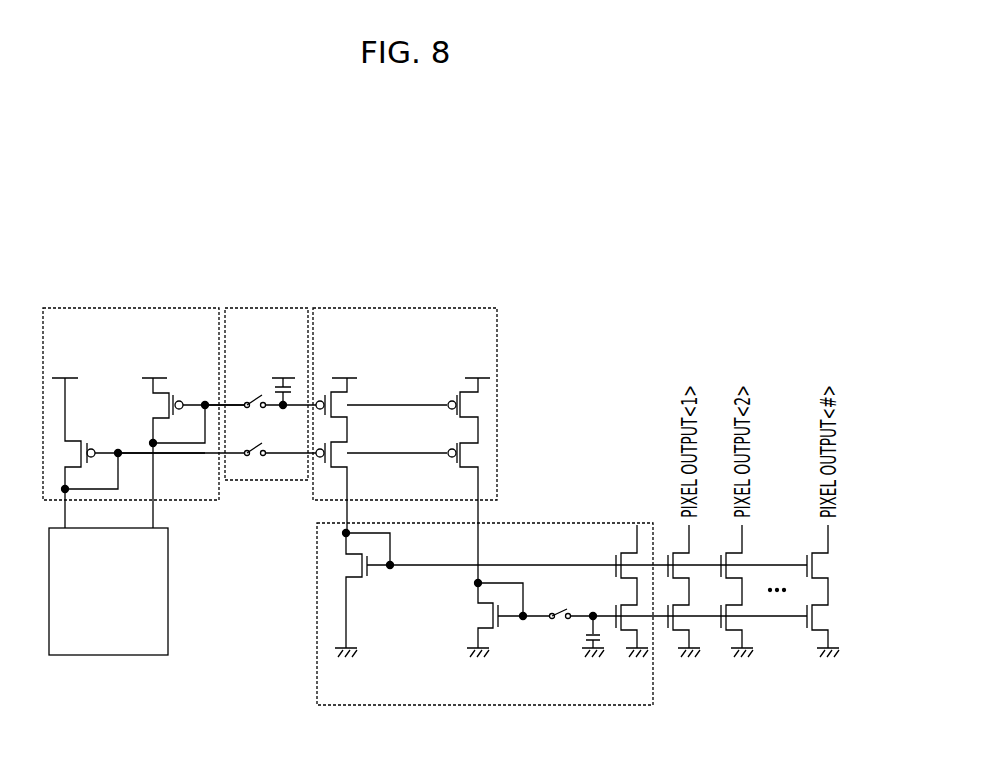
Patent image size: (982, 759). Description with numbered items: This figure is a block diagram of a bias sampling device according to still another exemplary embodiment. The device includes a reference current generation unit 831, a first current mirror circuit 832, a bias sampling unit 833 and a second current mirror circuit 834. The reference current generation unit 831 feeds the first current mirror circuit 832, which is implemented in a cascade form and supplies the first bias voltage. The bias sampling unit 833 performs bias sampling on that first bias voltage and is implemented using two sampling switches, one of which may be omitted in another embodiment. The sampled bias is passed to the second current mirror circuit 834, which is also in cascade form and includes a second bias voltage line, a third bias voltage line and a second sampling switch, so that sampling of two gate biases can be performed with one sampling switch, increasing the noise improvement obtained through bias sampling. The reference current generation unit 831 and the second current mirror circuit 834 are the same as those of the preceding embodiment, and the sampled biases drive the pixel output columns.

The reference current generation unit 831 is at (177, 513).
The first current mirror circuit 832 is at (98, 308).
The bias sampling unit 833 is at (260, 308).
The second current mirror circuit 834 is at (552, 523).